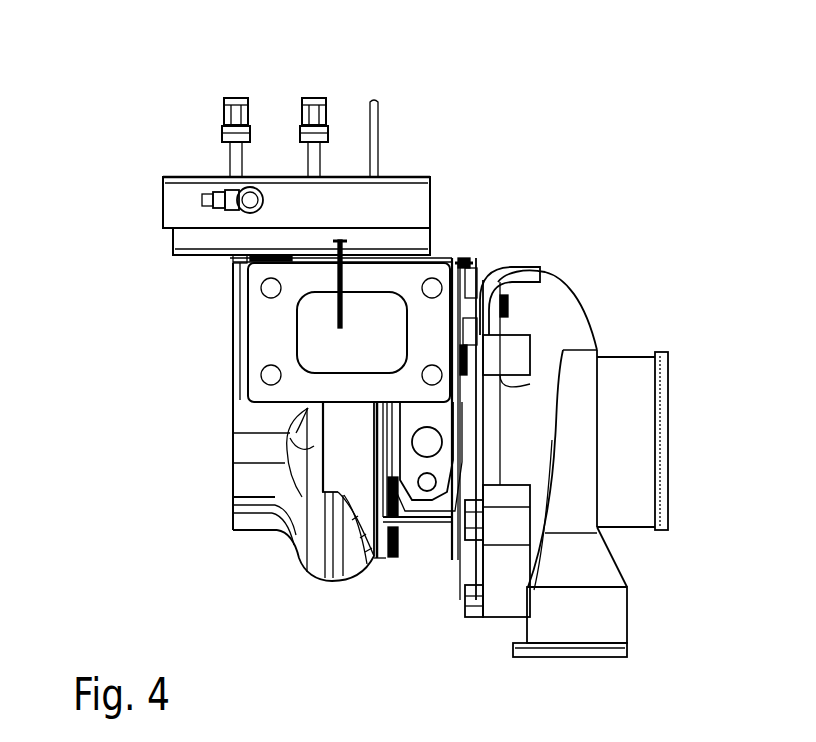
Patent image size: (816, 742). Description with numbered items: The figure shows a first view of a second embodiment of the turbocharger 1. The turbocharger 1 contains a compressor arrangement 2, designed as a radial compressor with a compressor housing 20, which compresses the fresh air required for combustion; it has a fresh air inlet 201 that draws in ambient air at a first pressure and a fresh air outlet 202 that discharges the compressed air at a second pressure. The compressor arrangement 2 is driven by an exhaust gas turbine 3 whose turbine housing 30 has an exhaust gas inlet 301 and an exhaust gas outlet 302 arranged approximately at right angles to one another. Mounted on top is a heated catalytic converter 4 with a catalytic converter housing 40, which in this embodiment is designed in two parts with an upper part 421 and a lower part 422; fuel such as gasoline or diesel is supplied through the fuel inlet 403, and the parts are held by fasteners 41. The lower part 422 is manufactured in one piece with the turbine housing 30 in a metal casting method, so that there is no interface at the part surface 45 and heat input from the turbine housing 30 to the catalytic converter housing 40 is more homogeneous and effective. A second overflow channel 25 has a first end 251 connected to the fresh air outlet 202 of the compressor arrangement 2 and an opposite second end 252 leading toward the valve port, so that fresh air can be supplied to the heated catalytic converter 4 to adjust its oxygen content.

The turbocharger 1 is at (595, 188).
The compressor arrangement 2 is at (670, 340).
The exhaust gas turbine 3 is at (190, 487).
The heated catalytic converter 4 is at (398, 160).
The compressor housing 20 is at (587, 552).
The second overflow channel 25 is at (490, 277).
The turbine housing 30 is at (352, 567).
The catalytic converter housing 40 is at (430, 180).
The fastening bolts 41 is at (238, 115).
The part surface 45 is at (233, 262).
The fresh air inlet 201 is at (613, 620).
The fresh air outlet 202 is at (668, 447).
The first end of second overflow channel 251 is at (510, 330).
The second end of second overflow channel 252 is at (373, 255).
The exhaust gas inlet 301 is at (305, 340).
The exhaust gas outlet 302 is at (235, 378).
The fuel inlet 403 is at (205, 198).
The upper part 421 is at (168, 203).
The lower part 422 is at (192, 240).